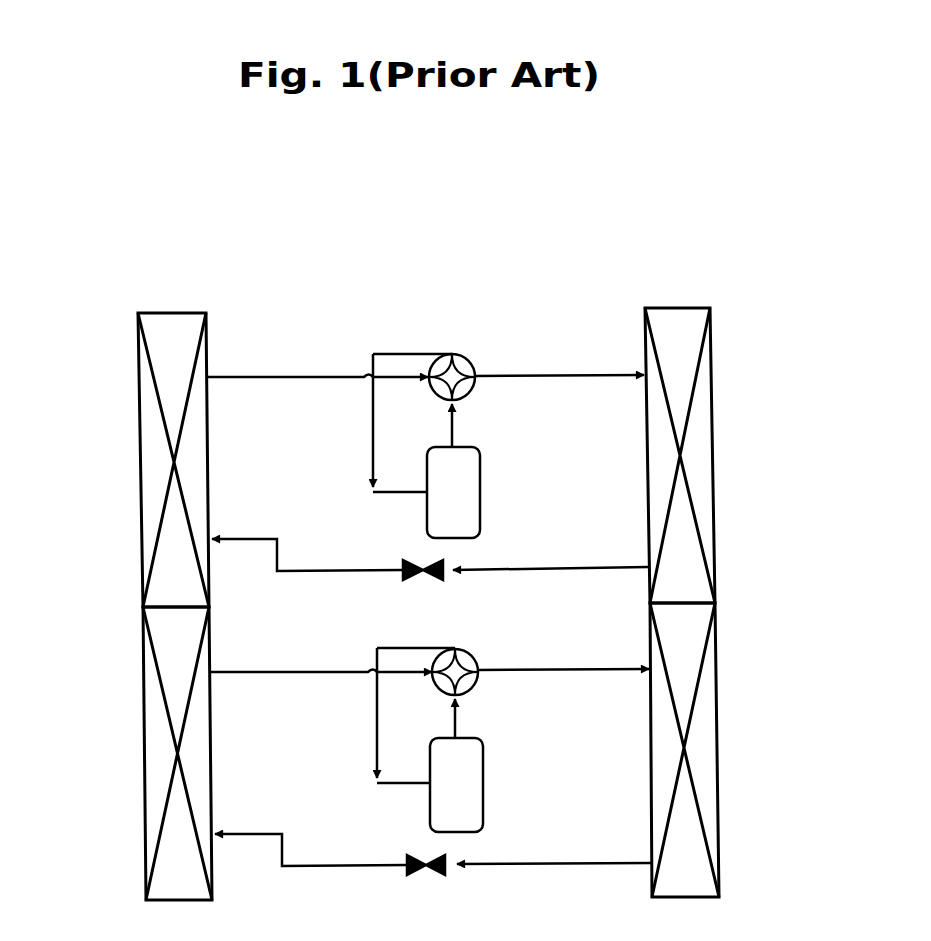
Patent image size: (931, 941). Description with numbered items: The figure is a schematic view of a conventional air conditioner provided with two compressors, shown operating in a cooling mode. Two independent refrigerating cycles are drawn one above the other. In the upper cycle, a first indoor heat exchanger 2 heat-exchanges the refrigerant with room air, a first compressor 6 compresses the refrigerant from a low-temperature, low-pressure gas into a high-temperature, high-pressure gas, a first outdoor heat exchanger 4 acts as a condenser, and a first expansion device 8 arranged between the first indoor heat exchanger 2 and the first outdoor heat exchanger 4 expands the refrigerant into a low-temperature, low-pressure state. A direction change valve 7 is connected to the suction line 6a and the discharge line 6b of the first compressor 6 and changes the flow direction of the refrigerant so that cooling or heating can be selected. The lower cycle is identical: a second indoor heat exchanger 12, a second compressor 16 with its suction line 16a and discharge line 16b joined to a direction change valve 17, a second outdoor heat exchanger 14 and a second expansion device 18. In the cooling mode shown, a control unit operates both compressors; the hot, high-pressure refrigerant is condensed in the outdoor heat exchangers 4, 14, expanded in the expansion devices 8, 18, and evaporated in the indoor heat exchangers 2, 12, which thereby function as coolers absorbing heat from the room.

The first indoor heat exchanger 2 is at (140, 460).
The first outdoor heat exchanger 4 is at (714, 453).
The first compressor 6 is at (480, 492).
The suction line 6a is at (373, 434).
The discharge line 6b is at (455, 428).
The direction change valve 7 is at (470, 360).
The first expansion device 8 is at (435, 583).
The second indoor heat exchanger 12 is at (144, 752).
The second outdoor heat exchanger 14 is at (718, 740).
The second compressor 16 is at (483, 782).
The suction line 16a is at (377, 727).
The discharge line 16b is at (458, 722).
The direction change valve 17 is at (472, 655).
The second expansion device 18 is at (439, 877).